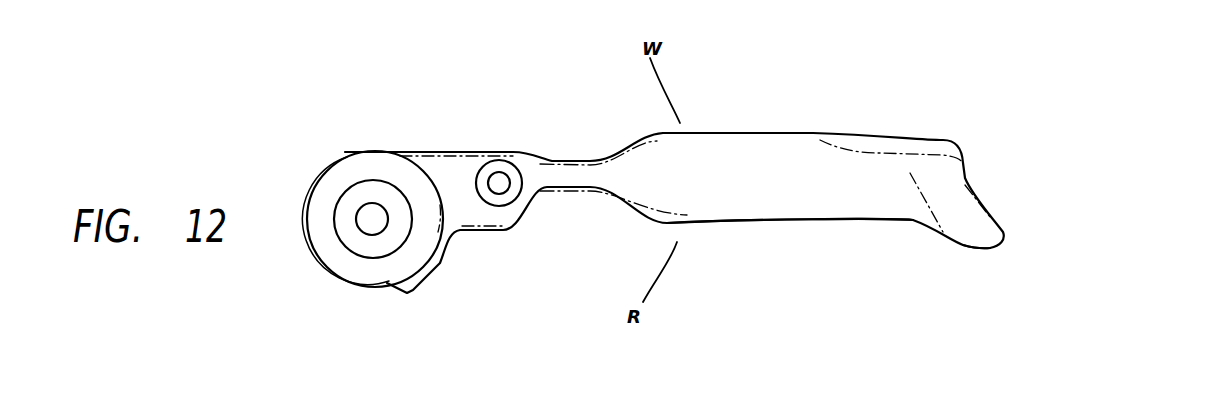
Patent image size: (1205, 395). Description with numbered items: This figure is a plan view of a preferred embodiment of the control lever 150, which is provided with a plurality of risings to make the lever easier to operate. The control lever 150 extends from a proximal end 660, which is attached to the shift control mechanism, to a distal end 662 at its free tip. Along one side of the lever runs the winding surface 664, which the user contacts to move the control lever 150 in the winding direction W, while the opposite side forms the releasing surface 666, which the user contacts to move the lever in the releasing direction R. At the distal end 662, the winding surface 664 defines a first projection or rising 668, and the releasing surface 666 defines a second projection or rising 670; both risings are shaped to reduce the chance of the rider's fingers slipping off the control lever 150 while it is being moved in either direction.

The control lever 150 is at (1062, 178).
The proximal end 660 is at (330, 192).
The distal end 662 is at (980, 201).
The winding surface 664 is at (827, 221).
The releasing surface 666 is at (792, 130).
The first rising 668 is at (977, 242).
The second rising 670 is at (942, 146).